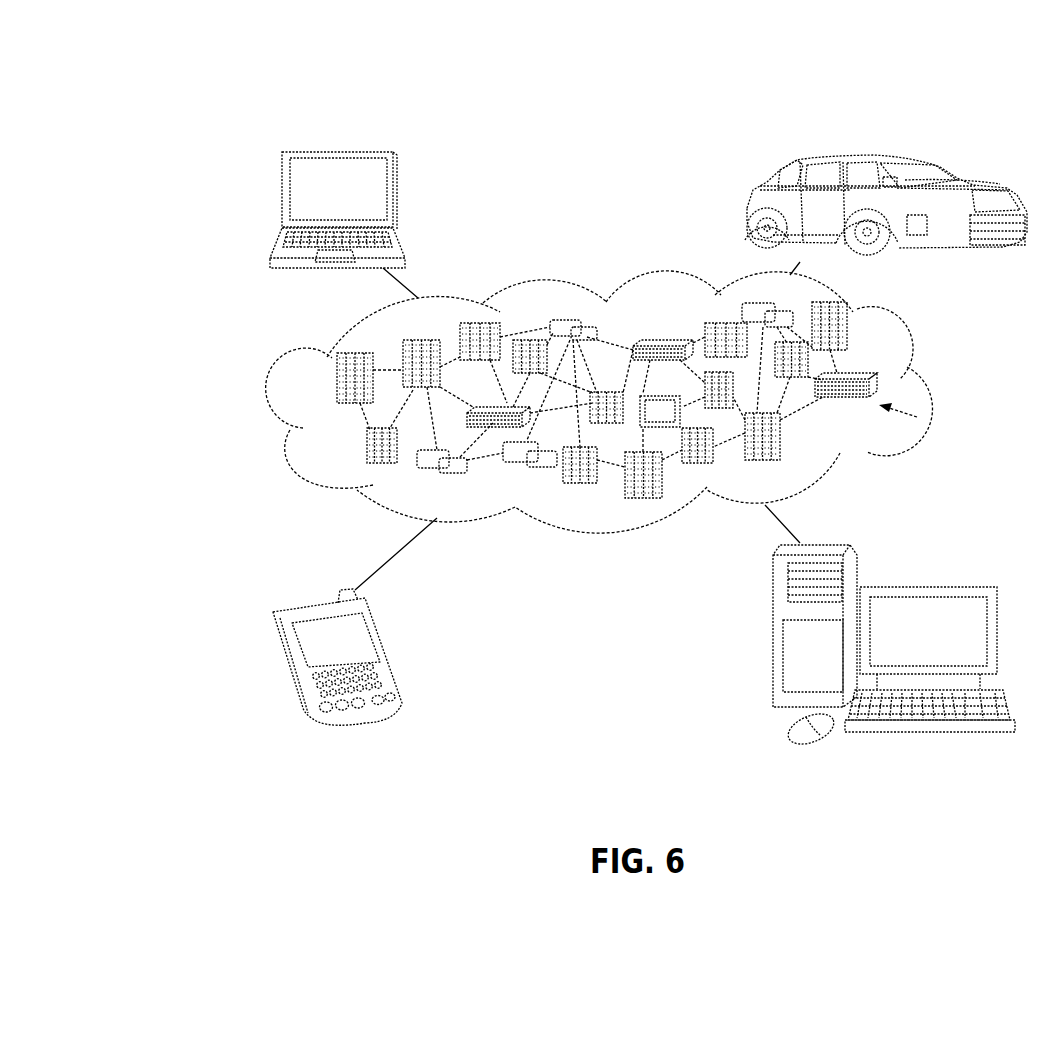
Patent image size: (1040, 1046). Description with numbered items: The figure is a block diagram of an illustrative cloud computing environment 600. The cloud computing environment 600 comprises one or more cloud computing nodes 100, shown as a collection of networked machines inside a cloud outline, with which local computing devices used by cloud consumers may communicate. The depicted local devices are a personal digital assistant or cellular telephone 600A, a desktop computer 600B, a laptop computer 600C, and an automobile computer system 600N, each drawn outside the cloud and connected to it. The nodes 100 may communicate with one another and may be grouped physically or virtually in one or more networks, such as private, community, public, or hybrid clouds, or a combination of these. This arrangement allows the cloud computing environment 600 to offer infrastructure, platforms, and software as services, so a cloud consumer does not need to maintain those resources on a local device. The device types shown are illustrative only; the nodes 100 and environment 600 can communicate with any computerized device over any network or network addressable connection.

The cloud computing environment 600 is at (222, 74).
The cloud computing nodes 100 is at (897, 420).
The personal digital assistant (PDA) or cellular telephone 600A is at (385, 650).
The desktop computer 600B is at (925, 585).
The laptop computer 600C is at (398, 198).
The automobile computer system 600N is at (749, 204).